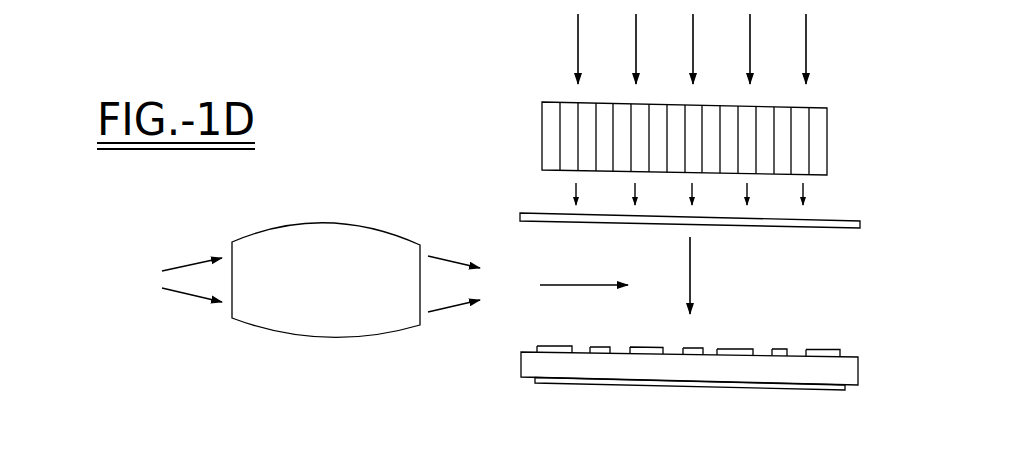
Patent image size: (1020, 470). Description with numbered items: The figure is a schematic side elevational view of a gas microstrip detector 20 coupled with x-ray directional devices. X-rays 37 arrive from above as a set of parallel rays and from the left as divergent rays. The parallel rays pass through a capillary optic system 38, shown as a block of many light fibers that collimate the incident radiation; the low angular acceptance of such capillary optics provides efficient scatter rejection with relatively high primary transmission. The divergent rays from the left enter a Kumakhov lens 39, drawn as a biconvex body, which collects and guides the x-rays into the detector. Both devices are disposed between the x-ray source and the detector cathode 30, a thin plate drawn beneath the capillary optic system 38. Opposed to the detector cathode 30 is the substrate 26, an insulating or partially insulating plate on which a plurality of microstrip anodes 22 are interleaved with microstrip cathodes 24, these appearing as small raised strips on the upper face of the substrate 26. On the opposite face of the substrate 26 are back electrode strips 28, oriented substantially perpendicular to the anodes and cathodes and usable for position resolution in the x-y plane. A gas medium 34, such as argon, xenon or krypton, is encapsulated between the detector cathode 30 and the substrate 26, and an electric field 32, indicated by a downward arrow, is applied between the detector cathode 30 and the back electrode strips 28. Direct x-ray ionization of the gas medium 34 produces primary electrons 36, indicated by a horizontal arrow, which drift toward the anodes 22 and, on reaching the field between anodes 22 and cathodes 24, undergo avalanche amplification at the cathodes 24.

The gas microstrip detector 20 is at (480, 210).
The microstrip anodes 22 is at (781, 349).
The microstrip cathodes 24 is at (823, 349).
The substrate 26 is at (521, 365).
The back electrode strips 28 is at (648, 386).
The detector cathode 30 is at (850, 220).
The electric field 32 is at (690, 257).
The gas medium 34 is at (792, 286).
The primary electrons 36 is at (570, 285).
The x-rays 37 is at (578, 40).
The capillary optic system 38 is at (542, 126).
The Kumakhov lens 39 is at (328, 223).